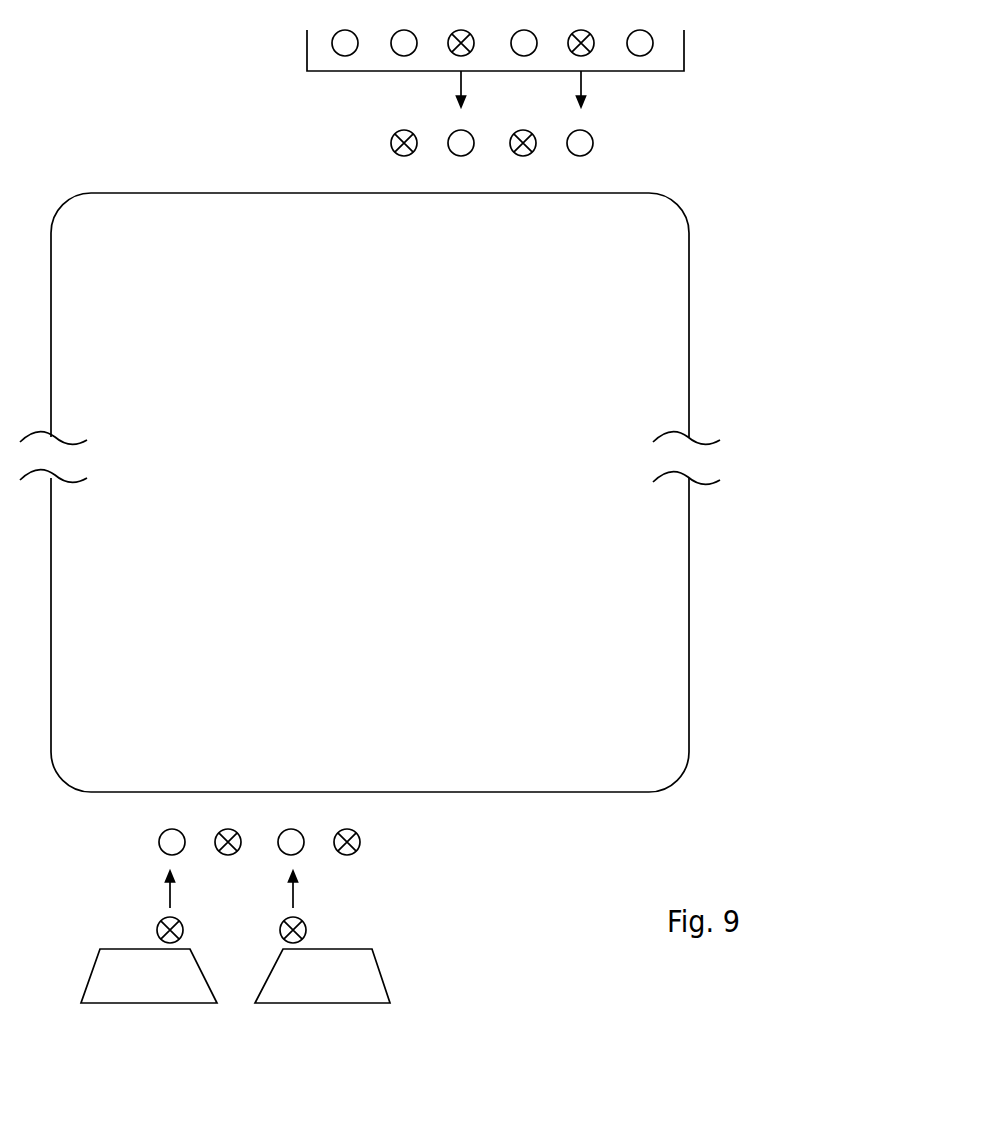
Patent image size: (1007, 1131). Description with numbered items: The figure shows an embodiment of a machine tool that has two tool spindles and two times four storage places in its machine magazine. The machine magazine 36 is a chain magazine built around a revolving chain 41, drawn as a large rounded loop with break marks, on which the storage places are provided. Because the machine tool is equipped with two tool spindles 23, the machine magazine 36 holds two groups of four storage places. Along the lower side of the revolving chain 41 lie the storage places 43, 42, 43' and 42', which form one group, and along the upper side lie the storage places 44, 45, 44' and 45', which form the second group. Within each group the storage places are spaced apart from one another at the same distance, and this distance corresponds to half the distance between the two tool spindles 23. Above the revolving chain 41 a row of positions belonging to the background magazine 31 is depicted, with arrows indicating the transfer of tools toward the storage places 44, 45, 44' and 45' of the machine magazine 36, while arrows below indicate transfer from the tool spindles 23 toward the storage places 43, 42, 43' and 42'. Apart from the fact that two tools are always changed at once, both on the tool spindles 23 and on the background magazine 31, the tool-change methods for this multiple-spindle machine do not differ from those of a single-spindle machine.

The tool spindle 23 is at (128, 987).
The background magazine 31 is at (268, 59).
The machine magazine 36 is at (765, 463).
The revolving chain 41 is at (689, 336).
The storage place 42 is at (251, 794).
The storage place 42' is at (372, 794).
The storage place 43 is at (195, 794).
The storage place 43' is at (314, 794).
The storage place 44 is at (380, 194).
The storage place 44' is at (500, 194).
The storage place 45 is at (435, 194).
The storage place 45' is at (556, 194).